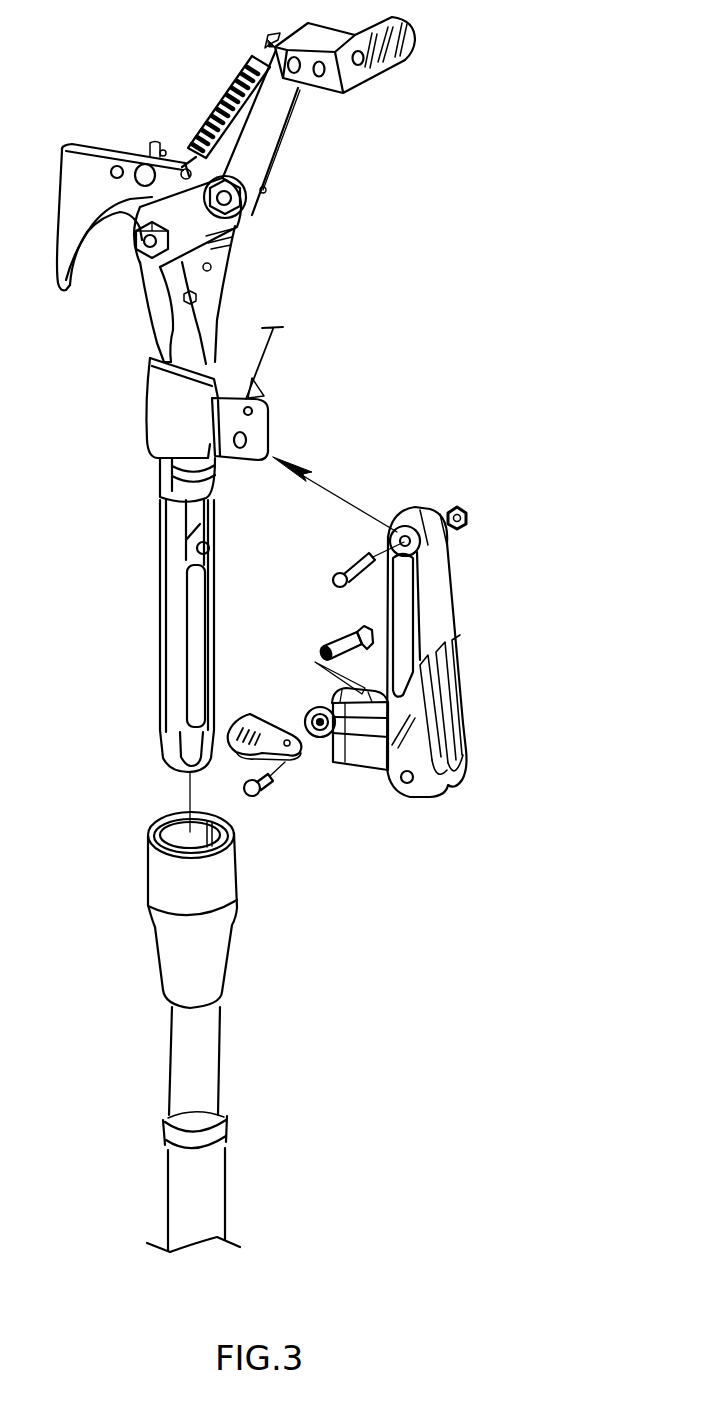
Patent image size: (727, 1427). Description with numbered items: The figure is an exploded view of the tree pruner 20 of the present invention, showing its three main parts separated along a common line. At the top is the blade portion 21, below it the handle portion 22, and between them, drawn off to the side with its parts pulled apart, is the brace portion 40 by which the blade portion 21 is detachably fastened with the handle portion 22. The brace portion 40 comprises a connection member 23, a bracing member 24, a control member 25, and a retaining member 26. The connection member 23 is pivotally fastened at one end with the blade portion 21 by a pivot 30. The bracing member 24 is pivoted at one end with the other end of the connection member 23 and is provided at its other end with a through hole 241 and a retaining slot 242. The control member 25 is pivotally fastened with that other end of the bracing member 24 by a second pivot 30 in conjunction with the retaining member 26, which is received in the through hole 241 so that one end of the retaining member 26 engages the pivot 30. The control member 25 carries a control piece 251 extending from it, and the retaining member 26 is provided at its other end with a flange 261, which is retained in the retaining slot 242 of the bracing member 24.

The tree pruner 20 is at (521, 191).
The blade portion 21 is at (156, 411).
The handle portion 22 is at (210, 1057).
The connection member 23 is at (440, 618).
The bracing member 24 is at (357, 762).
The control member 25 is at (254, 715).
The retaining member 26 is at (333, 647).
The pivot 30 is at (350, 568).
The brace portion 40 is at (513, 638).
The through hole 241 is at (321, 758).
The retaining slot 242 is at (348, 708).
The control piece 251 is at (228, 725).
The flange 261 is at (353, 617).